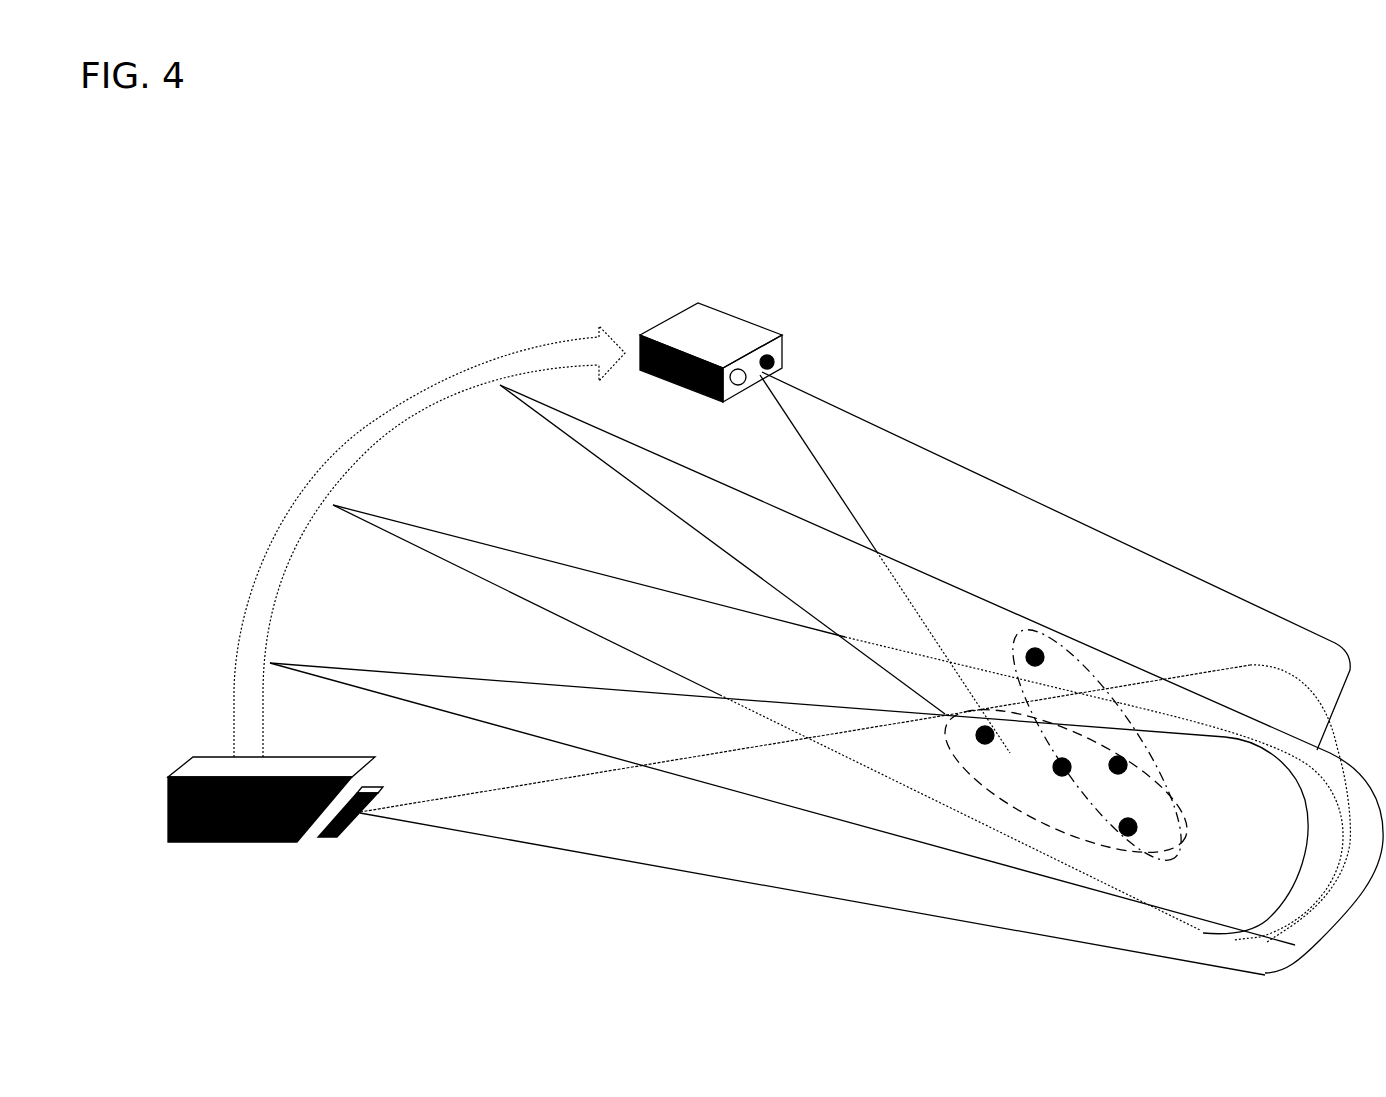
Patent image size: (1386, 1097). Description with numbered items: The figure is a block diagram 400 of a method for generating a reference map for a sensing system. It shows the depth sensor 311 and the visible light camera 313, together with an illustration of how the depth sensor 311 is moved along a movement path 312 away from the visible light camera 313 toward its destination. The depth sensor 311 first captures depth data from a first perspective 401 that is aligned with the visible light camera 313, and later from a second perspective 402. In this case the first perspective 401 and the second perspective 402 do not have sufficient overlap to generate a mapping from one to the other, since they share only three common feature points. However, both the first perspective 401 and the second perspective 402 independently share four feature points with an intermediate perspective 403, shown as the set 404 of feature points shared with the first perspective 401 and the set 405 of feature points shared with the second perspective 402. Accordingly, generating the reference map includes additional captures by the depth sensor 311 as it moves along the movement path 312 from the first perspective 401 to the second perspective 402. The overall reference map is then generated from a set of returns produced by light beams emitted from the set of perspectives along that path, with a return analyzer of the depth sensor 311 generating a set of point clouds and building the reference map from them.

The depth sensor 311 is at (673, 343).
The movement path 312 is at (388, 407).
The visible light camera 313 is at (260, 842).
The block diagram 400 is at (1252, 205).
The first perspective 401 is at (1037, 564).
The second perspective 402 is at (699, 854).
The perspective 403 is at (834, 582).
The set of feature points 404 is at (1067, 643).
The set of feature points 405 is at (1030, 813).